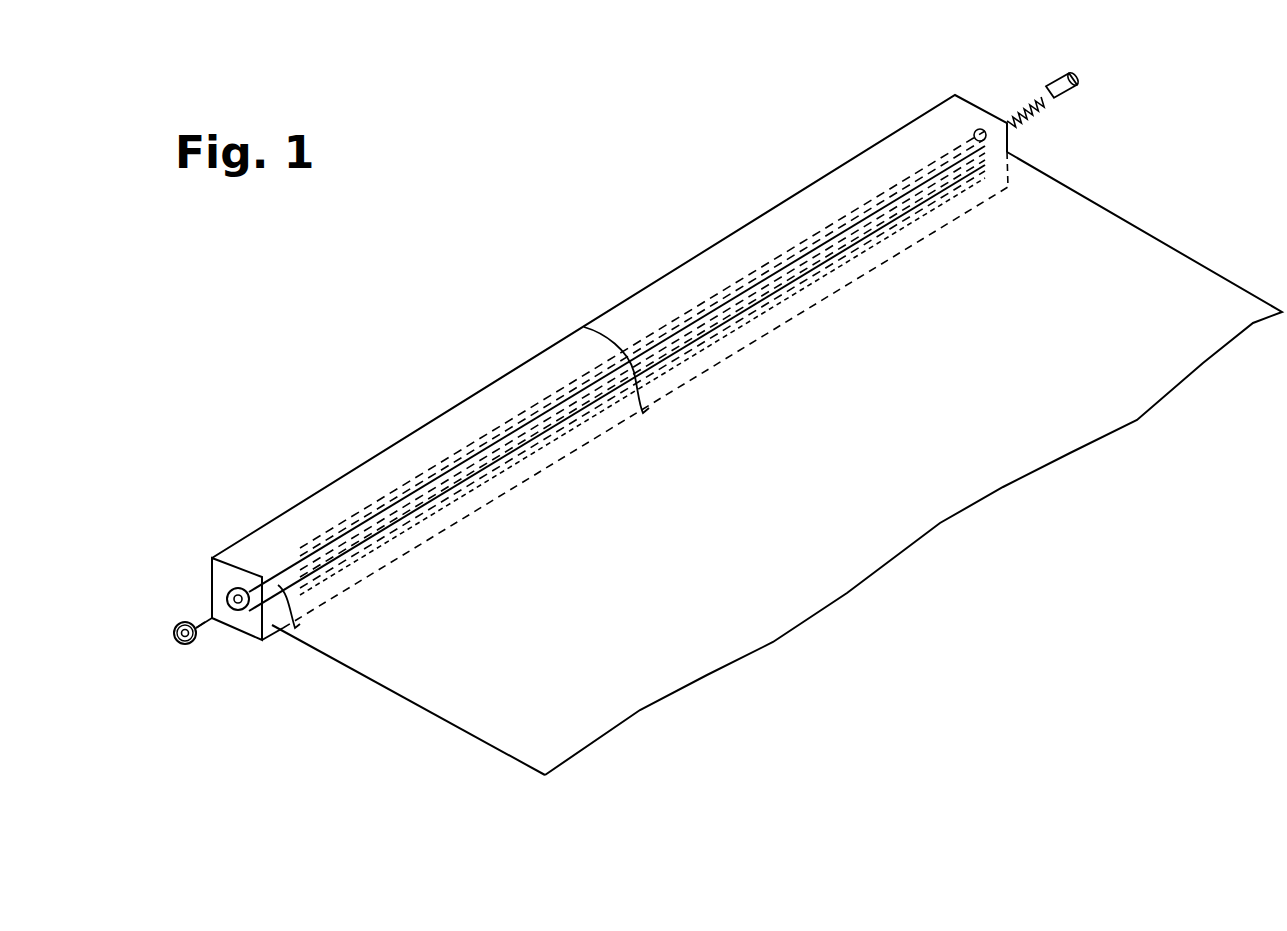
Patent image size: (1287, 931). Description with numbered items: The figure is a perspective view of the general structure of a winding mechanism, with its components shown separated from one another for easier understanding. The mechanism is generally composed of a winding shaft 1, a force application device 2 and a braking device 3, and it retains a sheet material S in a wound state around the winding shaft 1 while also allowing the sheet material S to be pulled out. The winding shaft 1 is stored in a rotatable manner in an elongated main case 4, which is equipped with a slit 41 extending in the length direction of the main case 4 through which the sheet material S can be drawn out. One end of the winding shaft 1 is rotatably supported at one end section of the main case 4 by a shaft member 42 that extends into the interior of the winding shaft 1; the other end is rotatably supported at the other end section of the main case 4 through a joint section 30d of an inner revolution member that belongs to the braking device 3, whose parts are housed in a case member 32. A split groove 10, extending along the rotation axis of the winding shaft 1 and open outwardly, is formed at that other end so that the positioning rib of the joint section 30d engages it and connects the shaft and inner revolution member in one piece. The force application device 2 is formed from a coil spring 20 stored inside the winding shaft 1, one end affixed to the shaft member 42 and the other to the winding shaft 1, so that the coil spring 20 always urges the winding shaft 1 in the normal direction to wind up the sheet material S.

The winding shaft 1 is at (518, 420).
The main case 4 is at (690, 262).
The split groove 10 is at (238, 588).
The braking device 3 is at (204, 642).
The case member 32 is at (184, 646).
The joint section 30d is at (203, 618).
The slit 41 is at (307, 612).
The force application device 2 is at (1058, 129).
The coil spring 20 is at (1033, 121).
The shaft member 42 is at (1072, 88).
The sheet material S is at (957, 503).